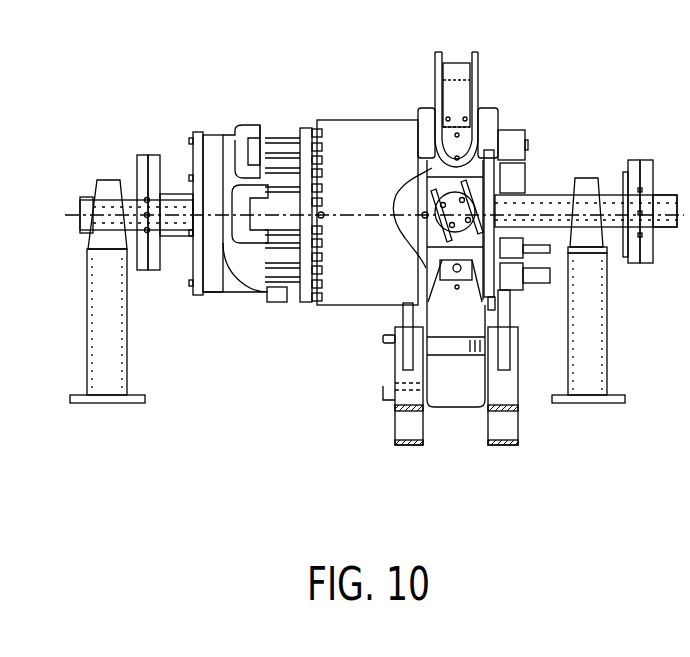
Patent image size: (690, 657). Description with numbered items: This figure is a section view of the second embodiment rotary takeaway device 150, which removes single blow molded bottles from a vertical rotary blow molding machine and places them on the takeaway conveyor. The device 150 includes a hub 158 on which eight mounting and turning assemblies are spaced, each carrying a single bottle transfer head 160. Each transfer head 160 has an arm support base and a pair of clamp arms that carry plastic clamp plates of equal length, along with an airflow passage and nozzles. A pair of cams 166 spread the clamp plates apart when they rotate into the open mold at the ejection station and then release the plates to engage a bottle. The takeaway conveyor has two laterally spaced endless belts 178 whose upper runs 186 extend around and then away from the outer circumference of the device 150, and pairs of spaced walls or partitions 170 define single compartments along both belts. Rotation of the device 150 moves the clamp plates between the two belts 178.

The rotary takeaway device 150 is at (303, 332).
The hub 158 is at (333, 116).
The single bottle transfer head 160 is at (400, 218).
The cams 166 is at (419, 108).
The walls or partitions 170 is at (405, 398).
The endless belts 178 is at (439, 405).
The upper runs 186 is at (395, 427).